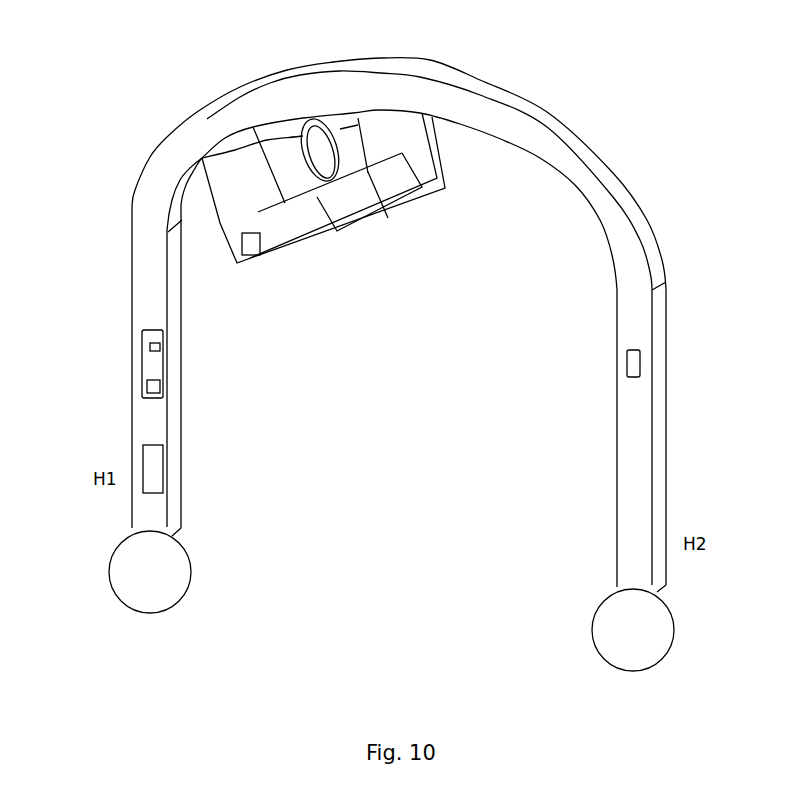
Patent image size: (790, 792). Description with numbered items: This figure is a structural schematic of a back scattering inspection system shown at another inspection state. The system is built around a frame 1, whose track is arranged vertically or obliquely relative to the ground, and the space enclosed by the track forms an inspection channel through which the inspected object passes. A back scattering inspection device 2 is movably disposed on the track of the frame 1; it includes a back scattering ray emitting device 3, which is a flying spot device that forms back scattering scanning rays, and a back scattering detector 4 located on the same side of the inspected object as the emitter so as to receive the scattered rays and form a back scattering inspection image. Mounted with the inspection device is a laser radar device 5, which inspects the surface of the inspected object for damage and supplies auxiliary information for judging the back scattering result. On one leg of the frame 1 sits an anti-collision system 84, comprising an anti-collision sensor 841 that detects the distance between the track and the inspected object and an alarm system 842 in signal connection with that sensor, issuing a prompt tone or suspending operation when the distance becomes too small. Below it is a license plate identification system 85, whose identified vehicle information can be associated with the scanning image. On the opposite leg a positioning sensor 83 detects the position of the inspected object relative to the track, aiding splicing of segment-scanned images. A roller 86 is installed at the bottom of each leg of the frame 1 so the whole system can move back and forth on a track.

The frame 1 is at (157, 172).
The back scattering inspection device 2 is at (418, 137).
The back scattering ray emitting device 3 is at (326, 140).
The back scattering detector 4 is at (352, 250).
The laser radar device 5 is at (256, 252).
The positioning sensor 83 is at (632, 363).
The anti-collision system 84 is at (157, 370).
The anti-collision sensor 841 is at (165, 348).
The alarm system 842 is at (167, 397).
The license plate identification system 85 is at (155, 463).
The roller 86 is at (128, 575).